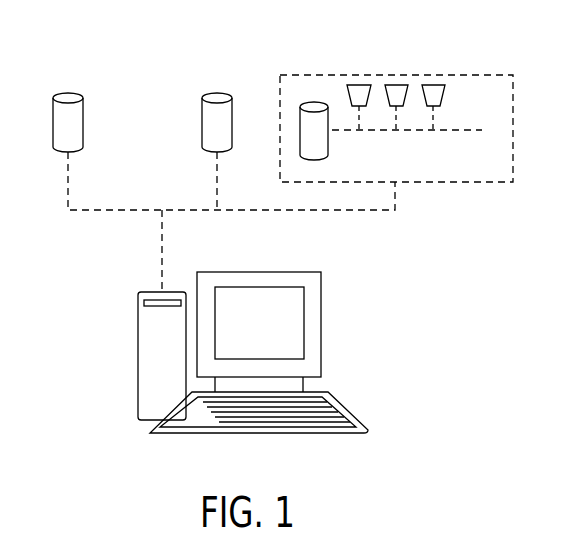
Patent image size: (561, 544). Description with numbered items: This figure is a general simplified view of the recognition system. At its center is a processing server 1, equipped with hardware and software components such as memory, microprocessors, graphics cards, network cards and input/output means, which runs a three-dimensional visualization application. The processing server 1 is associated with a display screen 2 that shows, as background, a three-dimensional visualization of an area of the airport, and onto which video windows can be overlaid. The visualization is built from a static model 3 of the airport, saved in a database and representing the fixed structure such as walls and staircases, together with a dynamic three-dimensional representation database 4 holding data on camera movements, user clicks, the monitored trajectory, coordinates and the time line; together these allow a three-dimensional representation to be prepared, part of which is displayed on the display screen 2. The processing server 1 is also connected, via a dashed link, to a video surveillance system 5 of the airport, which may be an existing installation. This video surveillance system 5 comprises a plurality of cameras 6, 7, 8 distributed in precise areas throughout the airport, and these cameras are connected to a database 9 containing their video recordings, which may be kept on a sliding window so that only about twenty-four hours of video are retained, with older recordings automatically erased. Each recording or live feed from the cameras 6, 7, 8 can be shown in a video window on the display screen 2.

The processing server 1 is at (157, 335).
The display screen 2 is at (287, 320).
The static model 3 is at (64, 97).
The dynamic 3D representation database 4 is at (216, 97).
The video surveillance system 5 is at (447, 162).
The camera 6 is at (357, 92).
The camera 7 is at (394, 92).
The camera 8 is at (436, 92).
The database 9 is at (311, 105).